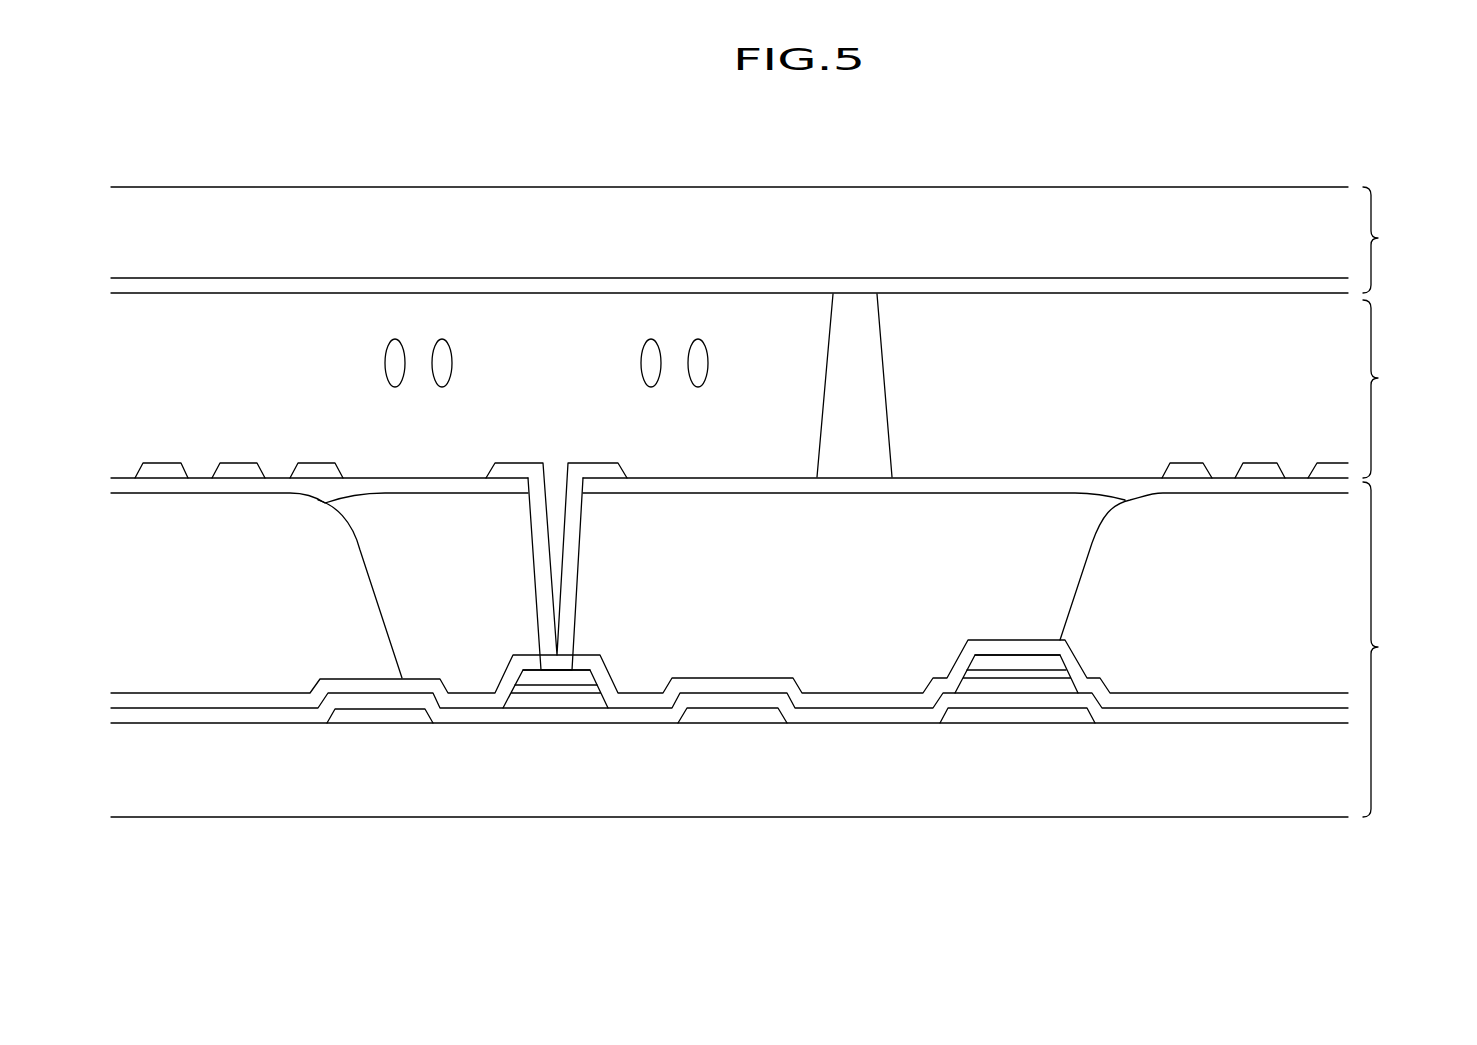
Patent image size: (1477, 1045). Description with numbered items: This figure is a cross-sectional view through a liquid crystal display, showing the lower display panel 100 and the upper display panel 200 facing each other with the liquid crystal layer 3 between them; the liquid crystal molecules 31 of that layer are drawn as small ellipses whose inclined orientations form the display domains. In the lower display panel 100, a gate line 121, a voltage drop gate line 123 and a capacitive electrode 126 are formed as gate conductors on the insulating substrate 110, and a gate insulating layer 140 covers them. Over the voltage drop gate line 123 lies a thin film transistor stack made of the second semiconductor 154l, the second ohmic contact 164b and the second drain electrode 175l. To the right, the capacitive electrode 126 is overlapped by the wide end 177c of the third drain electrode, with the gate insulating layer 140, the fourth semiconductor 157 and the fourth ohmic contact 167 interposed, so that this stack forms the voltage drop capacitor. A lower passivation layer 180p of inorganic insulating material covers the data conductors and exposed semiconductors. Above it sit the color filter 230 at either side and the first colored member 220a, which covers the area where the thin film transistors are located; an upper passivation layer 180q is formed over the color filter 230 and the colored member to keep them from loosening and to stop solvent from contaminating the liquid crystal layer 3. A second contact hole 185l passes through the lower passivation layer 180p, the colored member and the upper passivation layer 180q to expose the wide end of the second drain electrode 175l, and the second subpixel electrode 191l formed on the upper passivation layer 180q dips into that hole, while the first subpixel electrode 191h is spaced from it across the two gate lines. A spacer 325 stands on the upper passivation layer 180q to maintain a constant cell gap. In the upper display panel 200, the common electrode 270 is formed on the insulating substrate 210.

The liquid crystal layer 3 is at (893, 386).
The liquid crystal molecules 31 is at (453, 362).
The lower display panel 100 is at (770, 664).
The insulating substrate 110 is at (692, 790).
The gate line 121 is at (755, 715).
The voltage drop gate line 123 is at (380, 715).
The capacitive electrode 126 is at (972, 715).
The gate insulating layer 140 is at (870, 716).
The second semiconductor 154l is at (527, 700).
The fourth semiconductor 157 is at (1007, 685).
The second ohmic contact 164b is at (550, 688).
The fourth ohmic contact 167 is at (1027, 675).
The second drain electrode 175l is at (570, 678).
The wide end of third drain electrode 177c is at (1043, 662).
The lower passivation layer 180p is at (226, 698).
The upper passivation layer 180q is at (395, 485).
The second contact hole 185l is at (580, 547).
The second subpixel electrode 191l is at (165, 472).
The first subpixel electrode 191h is at (1190, 470).
The upper display panel 200 is at (770, 244).
The insulating substrate 210 is at (845, 215).
The first colored member 220a is at (727, 550).
The color filter 230 is at (155, 640).
The common electrode 270 is at (1210, 287).
The spacer 325 is at (867, 357).